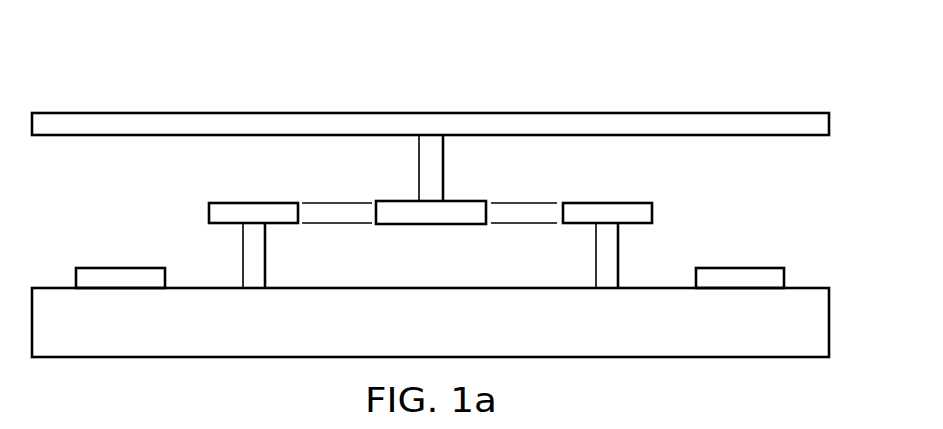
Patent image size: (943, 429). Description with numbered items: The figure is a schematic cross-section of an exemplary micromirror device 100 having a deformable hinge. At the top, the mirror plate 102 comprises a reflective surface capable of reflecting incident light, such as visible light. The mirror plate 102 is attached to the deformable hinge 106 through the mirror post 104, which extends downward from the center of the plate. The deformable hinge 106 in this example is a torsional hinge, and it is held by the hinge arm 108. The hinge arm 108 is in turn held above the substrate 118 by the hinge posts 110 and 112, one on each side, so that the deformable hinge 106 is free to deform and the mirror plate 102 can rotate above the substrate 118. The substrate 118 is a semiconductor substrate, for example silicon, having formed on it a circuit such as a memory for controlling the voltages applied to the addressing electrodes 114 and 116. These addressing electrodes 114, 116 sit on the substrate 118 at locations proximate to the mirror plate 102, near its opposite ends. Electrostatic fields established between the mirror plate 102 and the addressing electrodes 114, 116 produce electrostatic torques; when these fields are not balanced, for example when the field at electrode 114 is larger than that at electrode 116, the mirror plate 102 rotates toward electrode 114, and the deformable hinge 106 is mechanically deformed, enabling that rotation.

The micromirror device 100 is at (184, 62).
The mirror plate 102 is at (332, 112).
The mirror post 104 is at (418, 181).
The deformable hinge 106 is at (408, 226).
The hinge arm 108 is at (253, 201).
The hinge post 110 is at (243, 258).
The hinge post 112 is at (619, 258).
The addressing electrode 114 is at (120, 267).
The addressing electrode 116 is at (740, 267).
The substrate 118 is at (452, 287).